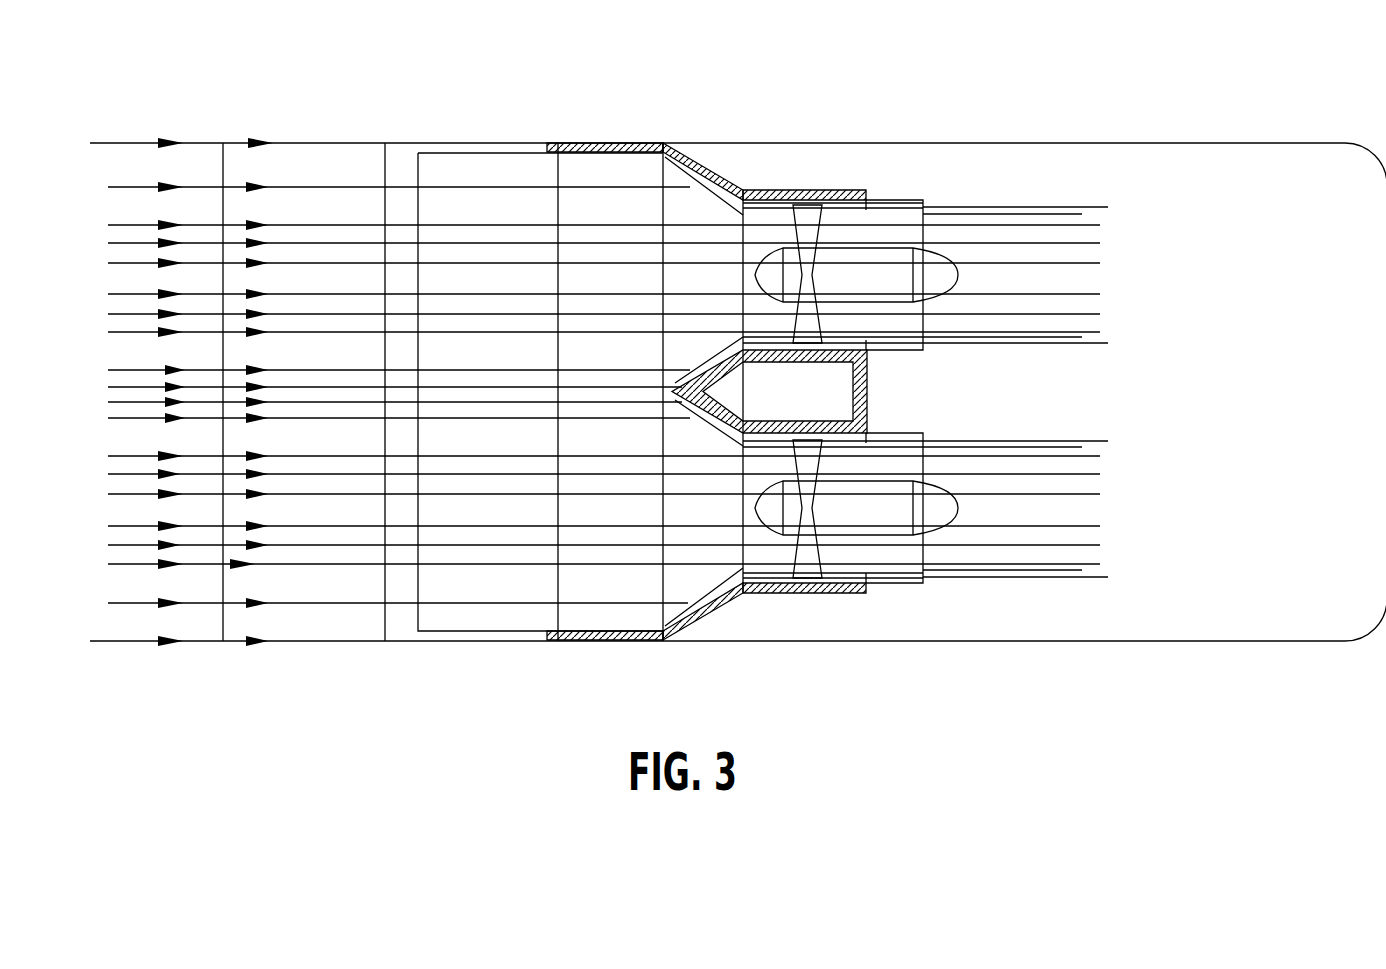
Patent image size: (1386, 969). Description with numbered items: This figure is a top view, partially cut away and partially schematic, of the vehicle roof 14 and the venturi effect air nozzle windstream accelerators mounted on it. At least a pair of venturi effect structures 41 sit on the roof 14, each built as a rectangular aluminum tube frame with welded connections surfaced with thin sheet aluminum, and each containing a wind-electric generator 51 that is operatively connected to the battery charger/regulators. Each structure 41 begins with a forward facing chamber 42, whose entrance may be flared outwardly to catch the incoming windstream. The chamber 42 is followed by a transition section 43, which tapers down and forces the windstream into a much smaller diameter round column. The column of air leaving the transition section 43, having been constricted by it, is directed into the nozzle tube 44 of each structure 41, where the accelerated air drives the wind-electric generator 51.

The roof 14 is at (1163, 582).
The venturi effect structure 41 is at (788, 190).
The forward facing chamber 42 is at (552, 163).
The transition section 43 is at (670, 184).
The nozzle tube 44 is at (925, 200).
The wind-electric generator 51 is at (867, 248).